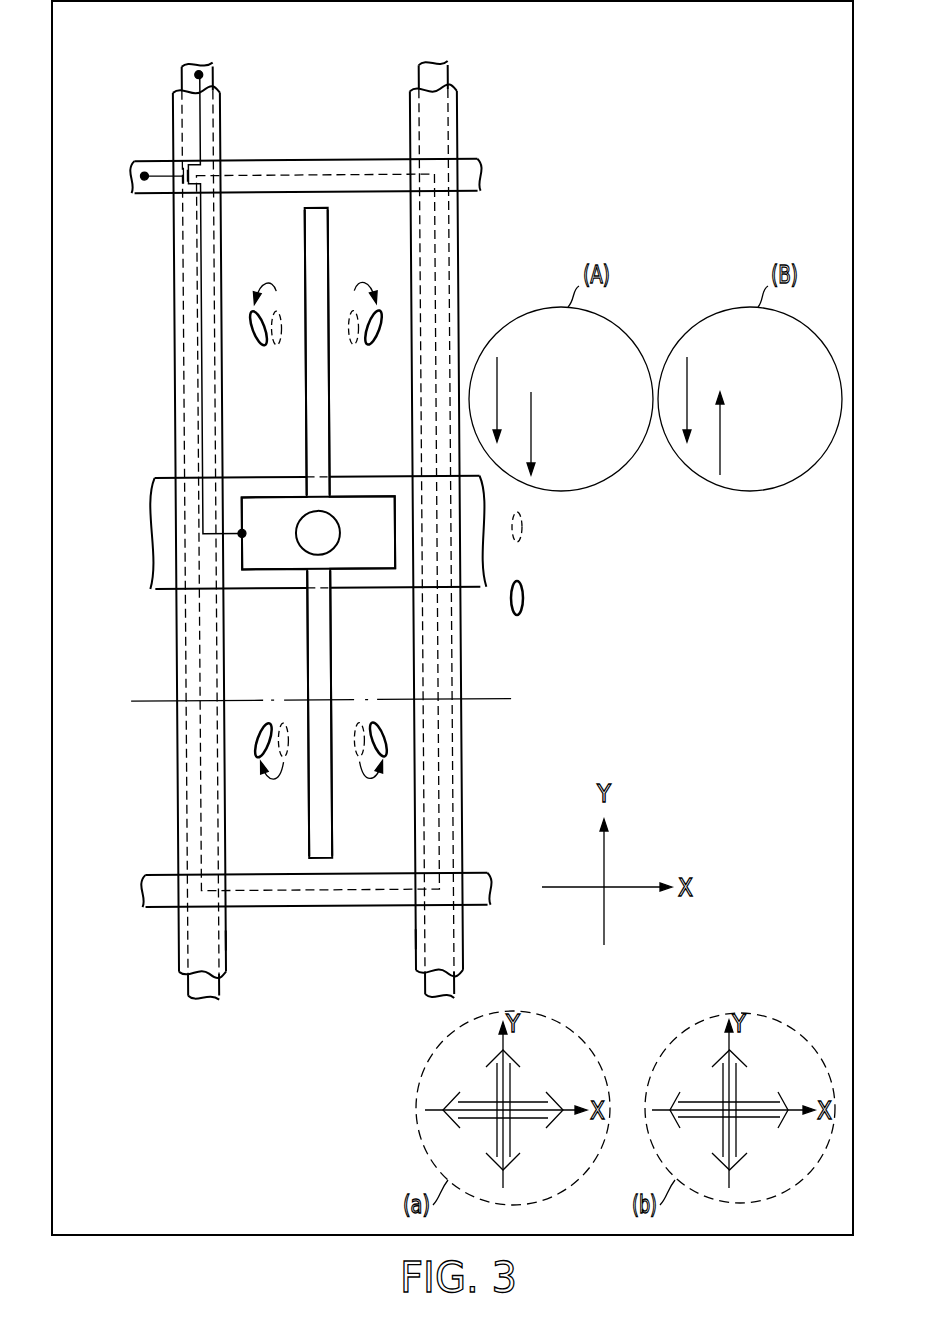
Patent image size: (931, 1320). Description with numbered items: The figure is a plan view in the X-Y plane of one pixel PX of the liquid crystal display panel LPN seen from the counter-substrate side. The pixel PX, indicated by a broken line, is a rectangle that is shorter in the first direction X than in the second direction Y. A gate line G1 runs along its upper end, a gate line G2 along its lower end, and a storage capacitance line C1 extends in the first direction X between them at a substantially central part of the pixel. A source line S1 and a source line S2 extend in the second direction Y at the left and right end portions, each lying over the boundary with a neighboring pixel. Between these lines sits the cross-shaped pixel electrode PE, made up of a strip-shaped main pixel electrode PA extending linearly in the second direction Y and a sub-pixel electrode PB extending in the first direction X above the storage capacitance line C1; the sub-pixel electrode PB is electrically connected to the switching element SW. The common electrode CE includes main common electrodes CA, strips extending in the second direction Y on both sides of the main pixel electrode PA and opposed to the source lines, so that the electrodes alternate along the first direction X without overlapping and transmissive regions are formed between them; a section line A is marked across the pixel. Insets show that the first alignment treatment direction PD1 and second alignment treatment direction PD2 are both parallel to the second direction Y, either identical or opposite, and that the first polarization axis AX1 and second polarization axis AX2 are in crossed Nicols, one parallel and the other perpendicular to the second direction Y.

The source line S1 is at (190, 66).
The source line S2 is at (431, 66).
The gate line G1 is at (133, 176).
The gate line G2 is at (140, 886).
The storage capacitance line C1 is at (152, 540).
The pixel PX is at (332, 165).
The liquid crystal display panel LPN is at (482, 148).
The switching element SW is at (193, 195).
The pixel electrode PE is at (338, 241).
The main pixel electrode PA is at (321, 396).
The sub-pixel electrode PB is at (295, 497).
The contact hole CH is at (331, 516).
The main common electrode CA is at (462, 664).
The common electrode CE is at (409, 940).
The section line A- A is at (320, 699).
The first alignment treatment direction PD1 is at (497, 366).
The second alignment treatment direction PD2 is at (531, 404).
The first polarization axis AX1 is at (542, 1118).
The second polarization axis AX2 is at (511, 1072).